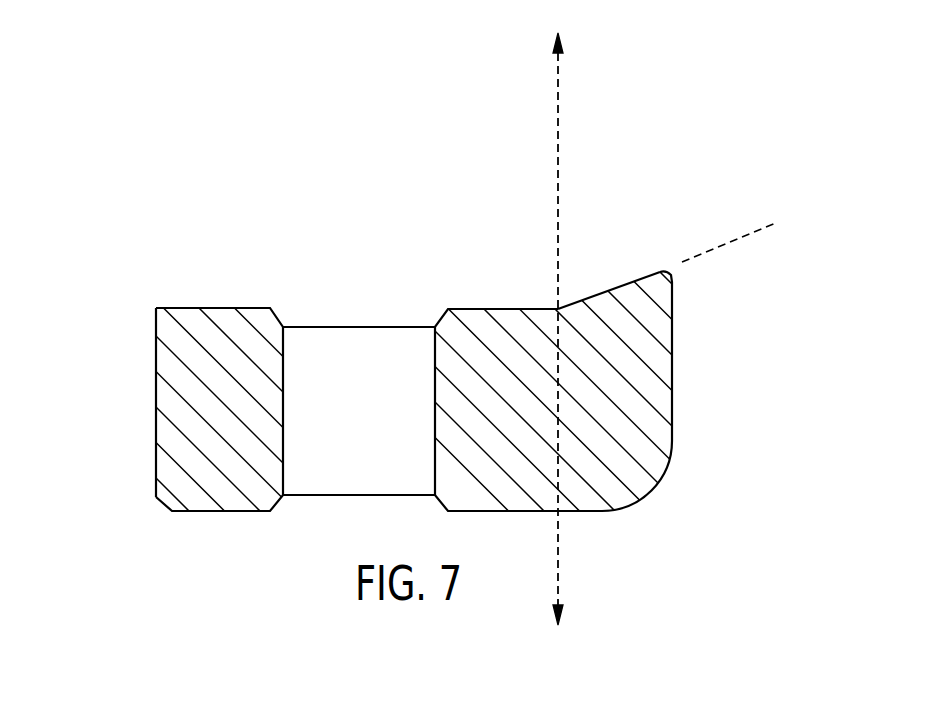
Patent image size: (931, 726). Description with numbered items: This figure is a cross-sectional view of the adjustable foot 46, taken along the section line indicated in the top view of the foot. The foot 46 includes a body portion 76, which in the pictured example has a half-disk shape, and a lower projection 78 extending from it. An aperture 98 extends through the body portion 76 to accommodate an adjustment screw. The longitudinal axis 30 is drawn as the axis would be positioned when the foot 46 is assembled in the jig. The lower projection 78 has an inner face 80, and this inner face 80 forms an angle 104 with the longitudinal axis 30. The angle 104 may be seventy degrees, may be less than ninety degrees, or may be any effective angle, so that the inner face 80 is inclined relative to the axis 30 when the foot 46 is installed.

The adjustable foot 46 is at (160, 274).
The body portion 76 is at (165, 398).
The lower projection 78 is at (655, 325).
The inner face 80 is at (642, 270).
The aperture 98 is at (339, 487).
The longitudinal axis 30 is at (558, 543).
The angle 104 is at (605, 112).